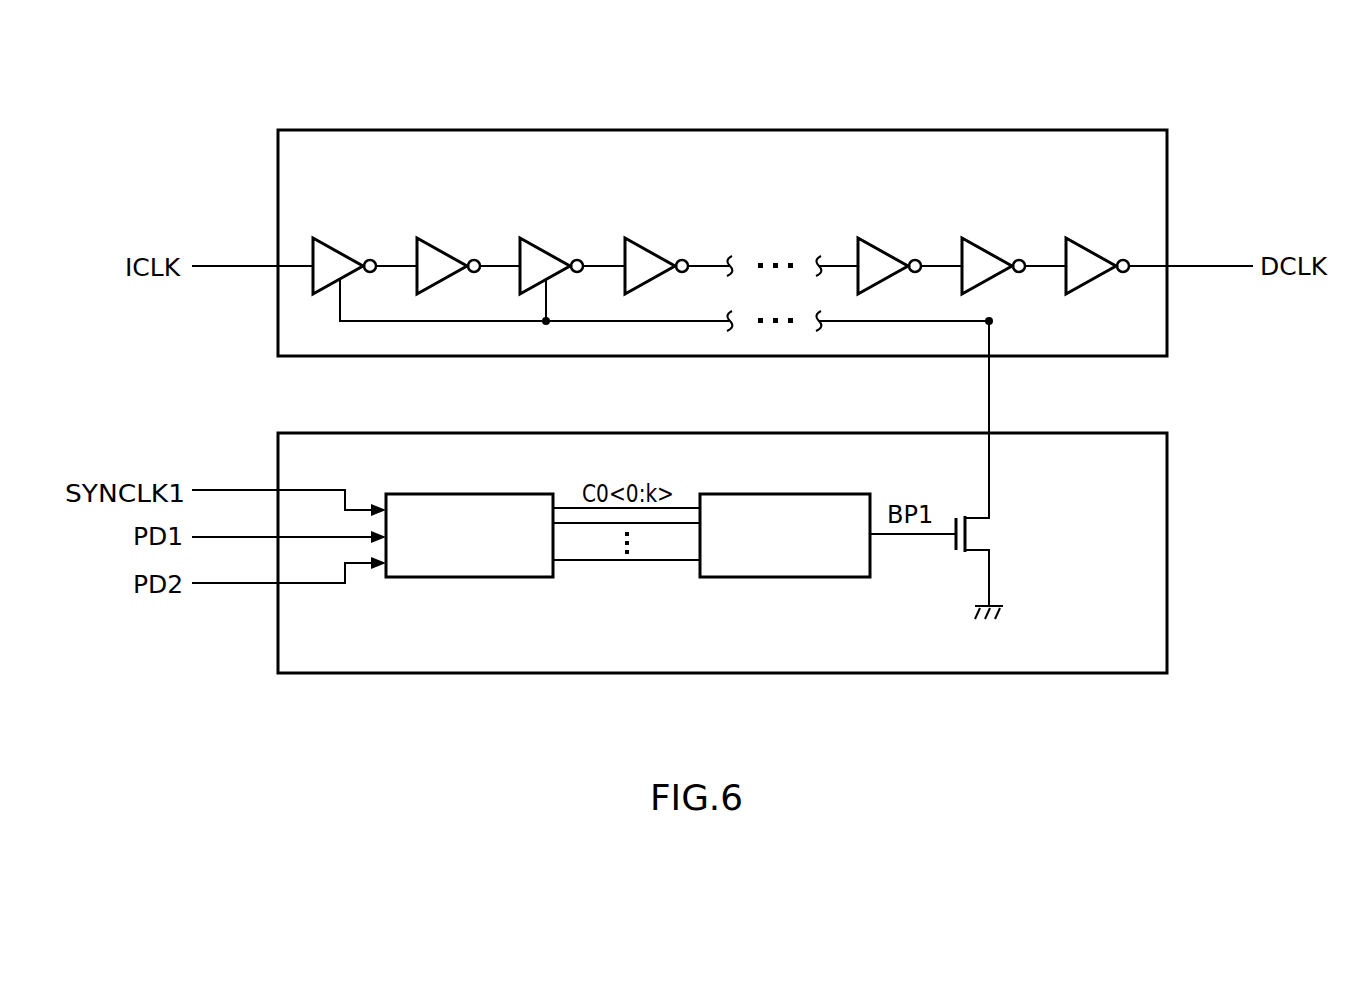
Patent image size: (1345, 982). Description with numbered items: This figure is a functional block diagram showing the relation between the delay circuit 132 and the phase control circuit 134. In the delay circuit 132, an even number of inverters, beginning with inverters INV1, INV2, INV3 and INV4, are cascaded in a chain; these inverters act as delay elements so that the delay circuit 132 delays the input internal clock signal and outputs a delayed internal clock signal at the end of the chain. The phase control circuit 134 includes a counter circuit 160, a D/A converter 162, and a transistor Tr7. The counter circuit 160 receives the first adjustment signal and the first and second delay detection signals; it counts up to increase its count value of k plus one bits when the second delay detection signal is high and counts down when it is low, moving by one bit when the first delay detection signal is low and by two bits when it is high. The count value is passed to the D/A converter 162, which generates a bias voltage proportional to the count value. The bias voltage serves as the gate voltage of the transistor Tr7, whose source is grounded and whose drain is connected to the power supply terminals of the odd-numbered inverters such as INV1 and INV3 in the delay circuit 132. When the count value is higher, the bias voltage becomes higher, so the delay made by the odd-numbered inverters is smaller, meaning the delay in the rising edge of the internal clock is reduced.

The delay circuit 132 is at (723, 130).
The phase control circuit 134 is at (723, 673).
The counter circuit 160 is at (470, 494).
The D/A converter 162 is at (787, 494).
The inverter INV1 is at (343, 246).
The inverter INV2 is at (447, 246).
The inverter INV3 is at (551, 246).
The inverter INV4 is at (655, 246).
The transistor Tr7 is at (952, 470).